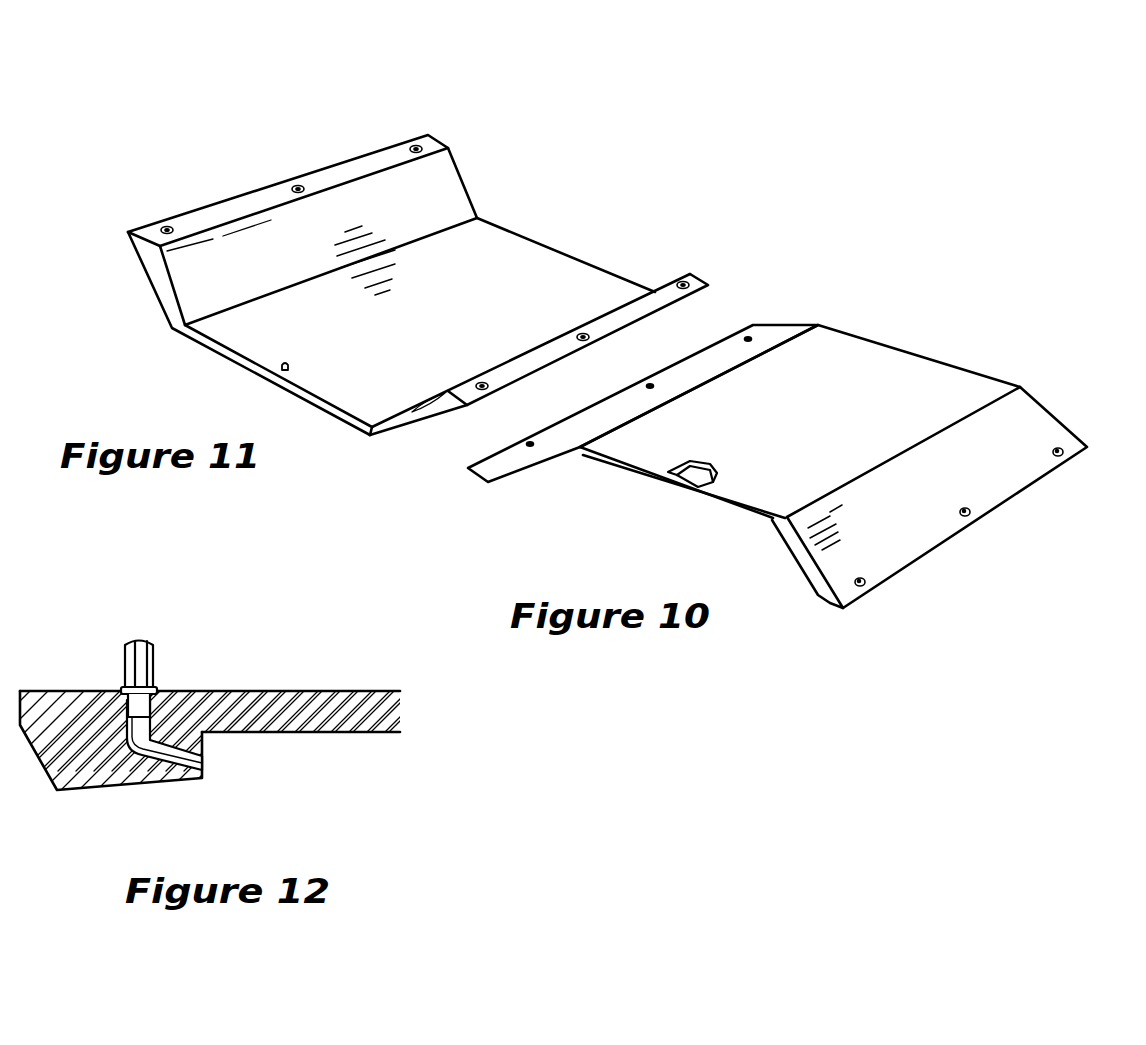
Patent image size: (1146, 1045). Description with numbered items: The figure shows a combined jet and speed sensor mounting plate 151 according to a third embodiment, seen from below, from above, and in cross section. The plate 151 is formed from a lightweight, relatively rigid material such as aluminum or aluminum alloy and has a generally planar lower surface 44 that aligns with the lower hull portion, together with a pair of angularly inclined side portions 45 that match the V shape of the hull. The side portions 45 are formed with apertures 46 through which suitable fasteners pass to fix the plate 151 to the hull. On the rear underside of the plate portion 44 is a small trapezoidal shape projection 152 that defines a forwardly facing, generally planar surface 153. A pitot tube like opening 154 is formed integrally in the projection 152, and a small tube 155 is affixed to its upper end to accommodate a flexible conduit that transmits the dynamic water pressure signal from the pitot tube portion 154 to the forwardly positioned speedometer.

In FIG. 11, the lower surface 44 is at (232, 337).
In FIG. 10, the lower surface 44 is at (633, 457).
In FIG. 11, the side portions 45 is at (153, 270).
In FIG. 10, the side portions 45 is at (523, 464).
In FIG. 11, the apertures 46 is at (168, 226).
In FIG. 10, the apertures 46 is at (1054, 456).
In FIG. 11, the combined jet and speed sensor mounting plate 151 is at (474, 188).
In FIG. 10, the combined jet and speed sensor mounting plate 151 is at (961, 358).
In FIG. 12, the combined jet and speed sensor mounting plate 151 is at (340, 742).
In FIG. 10, the trapezoidal shape projection 152 is at (694, 462).
In FIG. 12, the trapezoidal shape projection 152 is at (72, 792).
In FIG. 12, the forwardly facing planar surface 153 is at (208, 745).
In FIG. 12, the pitot tube like opening 154 is at (161, 750).
In FIG. 11, the small tube 155 is at (302, 368).
In FIG. 12, the small tube 155 is at (122, 668).